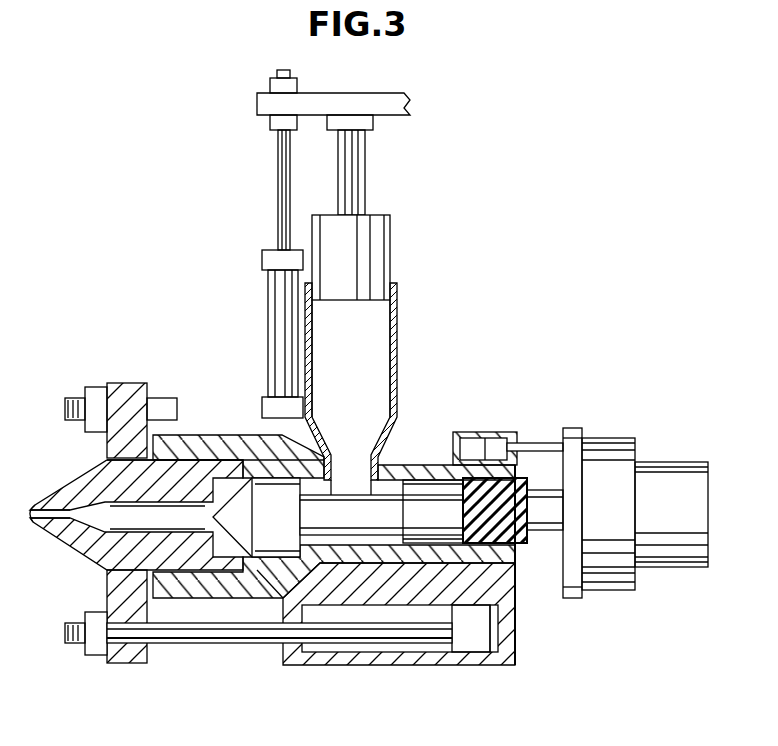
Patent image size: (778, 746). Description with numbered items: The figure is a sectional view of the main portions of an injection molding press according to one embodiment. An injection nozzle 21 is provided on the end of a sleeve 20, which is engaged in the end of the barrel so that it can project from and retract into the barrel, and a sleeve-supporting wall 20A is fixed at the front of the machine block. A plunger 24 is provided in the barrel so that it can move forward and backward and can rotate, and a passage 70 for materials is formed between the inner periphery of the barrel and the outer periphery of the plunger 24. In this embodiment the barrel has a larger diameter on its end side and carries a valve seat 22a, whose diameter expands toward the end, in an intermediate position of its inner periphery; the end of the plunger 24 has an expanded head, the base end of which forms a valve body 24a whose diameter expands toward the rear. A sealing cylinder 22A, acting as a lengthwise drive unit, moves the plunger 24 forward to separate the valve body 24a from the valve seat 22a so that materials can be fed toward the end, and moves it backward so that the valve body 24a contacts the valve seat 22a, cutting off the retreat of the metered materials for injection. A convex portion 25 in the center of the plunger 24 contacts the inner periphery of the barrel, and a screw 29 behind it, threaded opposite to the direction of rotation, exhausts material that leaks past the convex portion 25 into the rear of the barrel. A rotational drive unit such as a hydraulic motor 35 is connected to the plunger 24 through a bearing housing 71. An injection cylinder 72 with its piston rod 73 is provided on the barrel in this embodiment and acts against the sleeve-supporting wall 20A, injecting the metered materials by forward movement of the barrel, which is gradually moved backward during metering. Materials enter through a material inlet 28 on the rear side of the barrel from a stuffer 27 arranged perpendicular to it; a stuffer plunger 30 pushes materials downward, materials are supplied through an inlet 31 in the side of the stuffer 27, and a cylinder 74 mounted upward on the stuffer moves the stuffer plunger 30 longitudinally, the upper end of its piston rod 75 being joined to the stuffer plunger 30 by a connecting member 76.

The connecting member 76 is at (388, 93).
The piston rod 75 is at (278, 179).
The cylinder 74 is at (268, 326).
The stuffer plunger 30 is at (392, 232).
The inlet 31 is at (397, 318).
The stuffer 27 is at (380, 367).
The material inlet 28 is at (342, 464).
The sleeve-supporting wall 20A is at (133, 383).
The sleeve 20 is at (60, 488).
The injection nozzle 21 is at (28, 520).
The valve body 24a is at (292, 484).
The plunger 24 is at (376, 512).
The convex portion 25 is at (428, 484).
The screw 29 is at (470, 510).
The passage 70 is at (350, 545).
The injection cylinder 72 is at (392, 652).
The piston rod 73 is at (213, 633).
The valve seat 22a is at (257, 572).
The sealing cylinder 22A is at (522, 432).
The bearing housing 71 is at (632, 452).
The hydraulic motor 35 is at (657, 562).